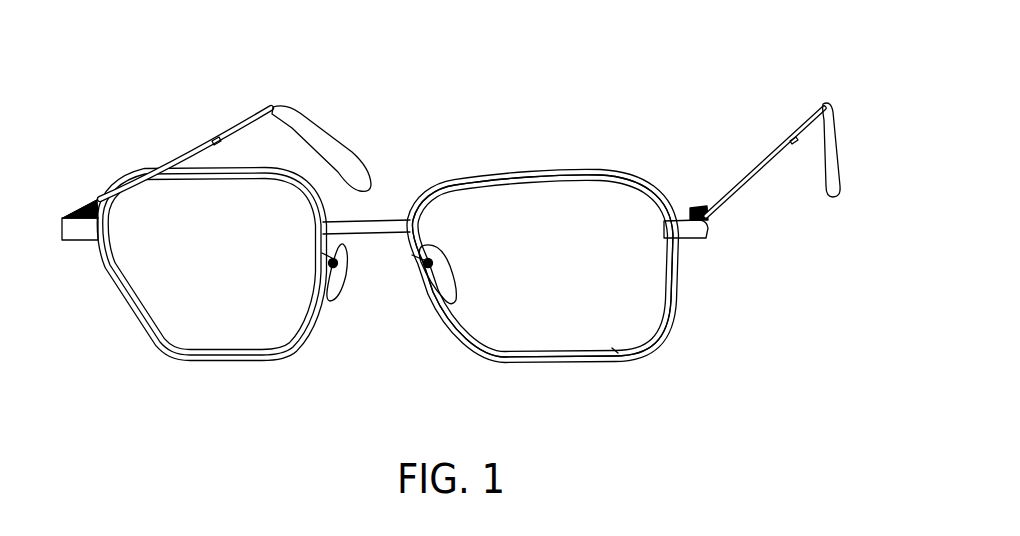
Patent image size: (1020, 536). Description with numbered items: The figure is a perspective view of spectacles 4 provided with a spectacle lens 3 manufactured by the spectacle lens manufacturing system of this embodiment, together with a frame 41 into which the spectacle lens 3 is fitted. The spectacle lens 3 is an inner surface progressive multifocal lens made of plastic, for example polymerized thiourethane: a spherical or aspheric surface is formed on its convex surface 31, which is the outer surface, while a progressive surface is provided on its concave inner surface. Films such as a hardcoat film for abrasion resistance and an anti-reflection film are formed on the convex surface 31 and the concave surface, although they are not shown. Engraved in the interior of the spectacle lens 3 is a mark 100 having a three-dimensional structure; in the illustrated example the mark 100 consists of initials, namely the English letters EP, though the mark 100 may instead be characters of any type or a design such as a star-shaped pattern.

The spectacles 4 is at (633, 124).
The frame 41 is at (697, 238).
The spectacle lens 3 is at (519, 343).
The convex surface 31 is at (567, 342).
The mark 100 is at (618, 348).
The English letters "EP" EP is at (612, 340).